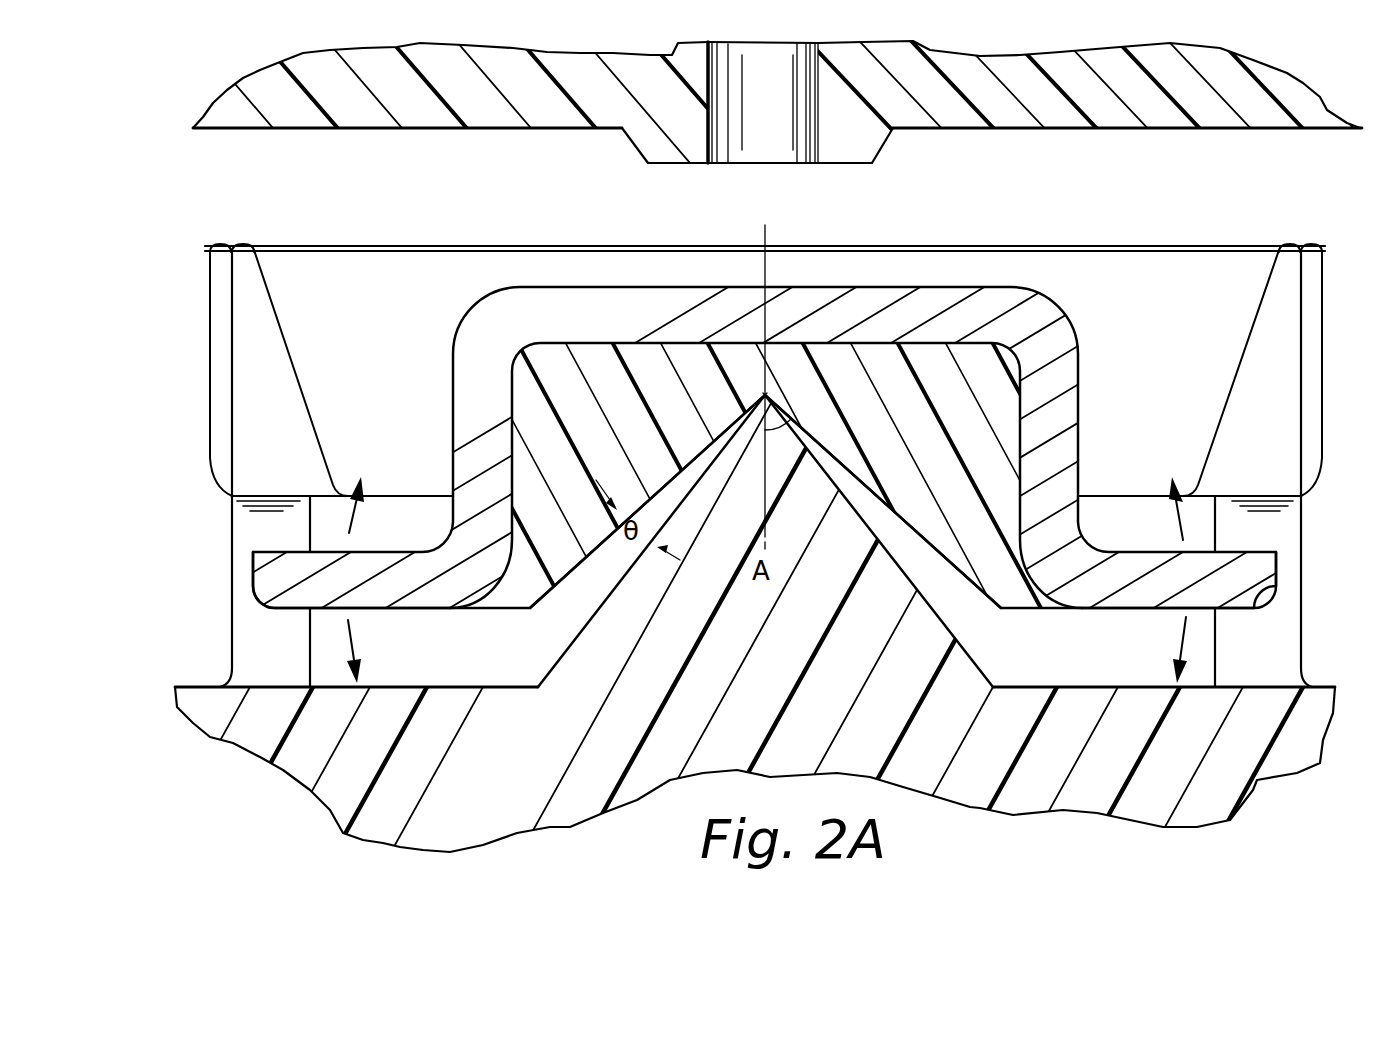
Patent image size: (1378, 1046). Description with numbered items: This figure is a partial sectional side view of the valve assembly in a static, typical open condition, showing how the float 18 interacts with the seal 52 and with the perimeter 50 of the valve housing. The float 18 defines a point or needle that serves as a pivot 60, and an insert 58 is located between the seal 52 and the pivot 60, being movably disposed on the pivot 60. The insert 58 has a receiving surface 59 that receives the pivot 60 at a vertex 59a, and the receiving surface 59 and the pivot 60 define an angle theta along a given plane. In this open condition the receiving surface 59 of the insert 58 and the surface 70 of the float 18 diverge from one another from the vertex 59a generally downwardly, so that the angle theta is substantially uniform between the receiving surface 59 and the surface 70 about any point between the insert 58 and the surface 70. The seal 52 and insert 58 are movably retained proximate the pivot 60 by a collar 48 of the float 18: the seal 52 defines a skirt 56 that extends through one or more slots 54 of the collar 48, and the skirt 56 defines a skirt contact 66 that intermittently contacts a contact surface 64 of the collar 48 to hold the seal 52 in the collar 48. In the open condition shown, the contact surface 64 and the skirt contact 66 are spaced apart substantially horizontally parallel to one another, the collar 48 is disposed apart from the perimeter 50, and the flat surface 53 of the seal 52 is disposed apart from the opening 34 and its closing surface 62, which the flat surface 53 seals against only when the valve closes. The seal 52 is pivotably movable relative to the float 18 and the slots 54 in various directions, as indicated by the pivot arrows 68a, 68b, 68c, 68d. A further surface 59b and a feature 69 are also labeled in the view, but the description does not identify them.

The float 18 is at (399, 815).
The opening 34 is at (782, 165).
The collar 48 is at (1197, 249).
The perimeter 50 is at (401, 129).
The seal 52 is at (1043, 245).
The flat surface 53 is at (858, 287).
The slots 54 is at (270, 643).
The skirt 56 is at (1147, 552).
The insert 58 is at (523, 413).
The receiving surface 59 is at (835, 464).
The vertex 59a is at (764, 395).
The sealing surface 59b is at (696, 462).
The pivot 60 is at (786, 423).
The closing surface 62 is at (660, 165).
The contact surface 64 is at (1272, 488).
The skirt contact 66 is at (1264, 496).
The pivot arrow 68a is at (1151, 491).
The pivot arrow 68b is at (1147, 651).
The pivot arrow 68c is at (382, 651).
The pivot arrow 68d is at (372, 484).
The contact point 69 is at (881, 552).
The surface 70 is at (600, 589).